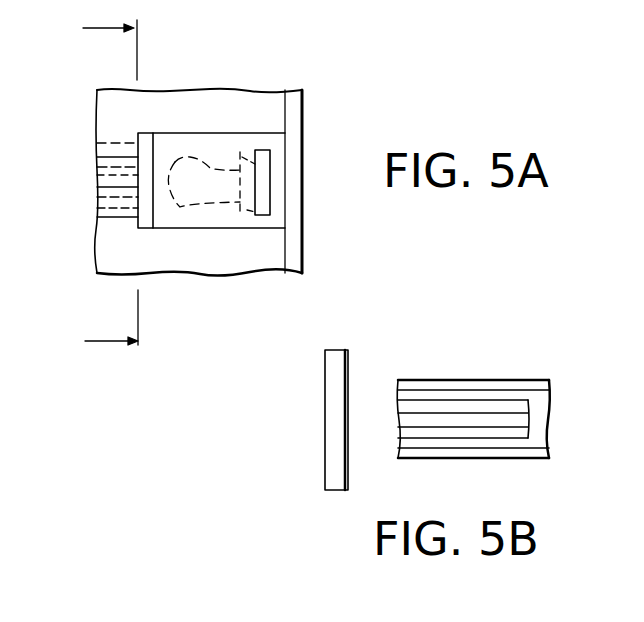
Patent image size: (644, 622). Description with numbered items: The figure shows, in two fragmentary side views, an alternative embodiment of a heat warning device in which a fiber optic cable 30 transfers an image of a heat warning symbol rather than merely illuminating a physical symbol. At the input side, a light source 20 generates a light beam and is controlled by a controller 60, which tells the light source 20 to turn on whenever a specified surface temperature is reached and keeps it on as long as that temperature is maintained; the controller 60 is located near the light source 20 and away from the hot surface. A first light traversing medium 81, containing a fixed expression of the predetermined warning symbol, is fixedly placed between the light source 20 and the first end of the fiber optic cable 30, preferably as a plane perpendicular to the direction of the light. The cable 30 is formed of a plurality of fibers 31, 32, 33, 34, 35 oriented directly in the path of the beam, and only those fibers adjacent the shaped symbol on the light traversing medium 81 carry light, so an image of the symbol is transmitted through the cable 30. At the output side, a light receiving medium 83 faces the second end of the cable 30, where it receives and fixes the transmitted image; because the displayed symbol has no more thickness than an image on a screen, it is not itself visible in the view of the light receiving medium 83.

In FIG. 5A, the light source 20 is at (192, 185).
In FIG. 5B, the fiber optic cable 30 is at (501, 444).
In FIG. 5A, the fiber 31 is at (103, 153).
In FIG. 5A, the fiber 32 is at (95, 163).
In FIG. 5A, the fiber 33 is at (97, 190).
In FIG. 5A, the fiber 34 is at (103, 210).
In FIG. 5A, the fiber 35 is at (115, 217).
In FIG. 5B, the fiber 35 is at (505, 450).
In FIG. 5A, the controller 60 is at (270, 213).
In FIG. 5A, the light traversing medium 81 is at (155, 155).
In FIG. 5B, the light receiving medium 83 is at (338, 365).